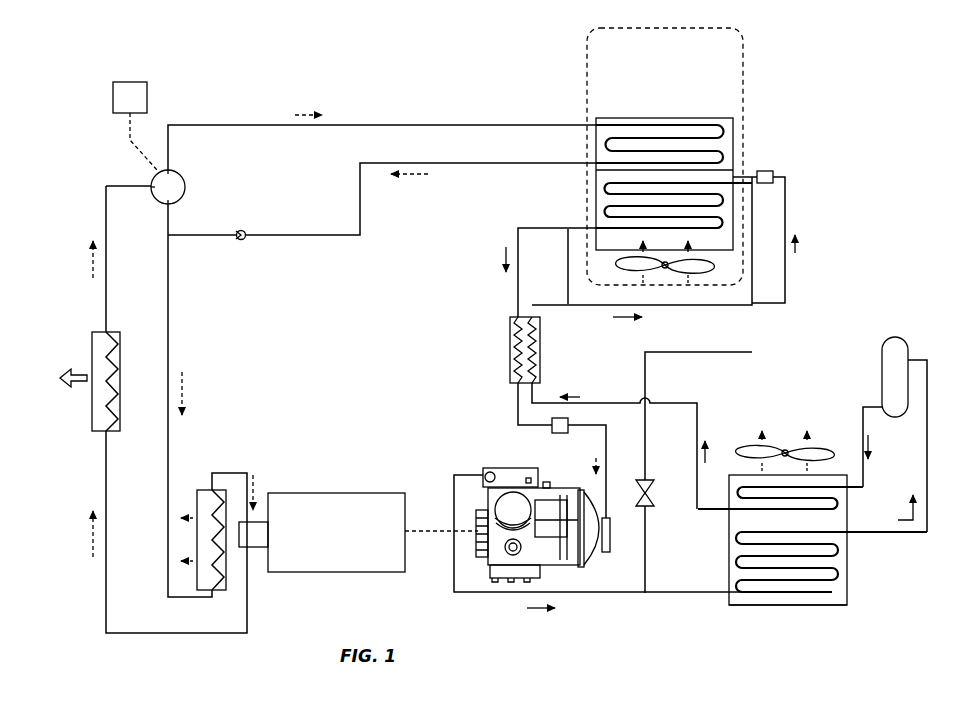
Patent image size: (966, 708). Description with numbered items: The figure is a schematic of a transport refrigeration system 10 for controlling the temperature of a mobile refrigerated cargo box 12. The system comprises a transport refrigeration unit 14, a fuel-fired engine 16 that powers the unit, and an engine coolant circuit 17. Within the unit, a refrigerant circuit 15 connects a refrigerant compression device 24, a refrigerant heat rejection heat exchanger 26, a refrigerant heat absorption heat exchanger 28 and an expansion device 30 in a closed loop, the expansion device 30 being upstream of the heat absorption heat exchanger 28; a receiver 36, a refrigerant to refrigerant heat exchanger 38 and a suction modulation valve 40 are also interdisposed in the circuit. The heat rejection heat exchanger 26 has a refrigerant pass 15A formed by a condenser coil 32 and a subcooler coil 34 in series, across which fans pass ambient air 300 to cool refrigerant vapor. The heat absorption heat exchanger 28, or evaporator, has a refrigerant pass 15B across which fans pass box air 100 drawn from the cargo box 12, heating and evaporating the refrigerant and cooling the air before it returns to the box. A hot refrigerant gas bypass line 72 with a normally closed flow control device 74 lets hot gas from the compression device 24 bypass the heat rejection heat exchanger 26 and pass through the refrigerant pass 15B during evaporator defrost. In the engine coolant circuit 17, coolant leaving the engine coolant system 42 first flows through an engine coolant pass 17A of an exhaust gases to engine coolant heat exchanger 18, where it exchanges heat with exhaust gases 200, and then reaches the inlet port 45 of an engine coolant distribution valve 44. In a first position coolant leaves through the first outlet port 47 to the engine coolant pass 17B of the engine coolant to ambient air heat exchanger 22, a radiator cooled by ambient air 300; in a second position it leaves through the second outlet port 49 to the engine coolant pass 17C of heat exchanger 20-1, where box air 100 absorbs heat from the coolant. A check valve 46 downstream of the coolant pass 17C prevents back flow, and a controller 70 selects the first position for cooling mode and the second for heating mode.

The transport refrigeration system 10 is at (195, 72).
The mobile refrigerated cargo box 12 is at (743, 62).
The transport refrigeration unit 14 is at (818, 325).
The refrigerant circuit 15 is at (568, 266).
The refrigerant pass 15A is at (835, 545).
The refrigerant pass 15B is at (604, 186).
The fuel-fired engine 16 is at (352, 493).
The engine coolant circuit 17 is at (238, 125).
The engine coolant pass 17A is at (110, 385).
The engine coolant pass 17B is at (205, 535).
The engine coolant pass 17C is at (670, 137).
The engine exhaust gases to engine coolant heat exchanger 18 is at (120, 335).
The heat exchanger 20-1 is at (733, 135).
The engine coolant to ambient air heat exchanger 22 is at (197, 510).
The refrigerant compression device 24 is at (580, 565).
The refrigerant heat rejection heat exchanger 26 is at (847, 575).
The refrigerant heat absorption heat exchanger 28 is at (733, 202).
The expansion device 30 is at (768, 171).
The condenser coil 32 is at (797, 596).
The subcooler coil 34 is at (838, 506).
The receiver 36 is at (905, 338).
The refrigerant to refrigerant heat exchanger 38 is at (540, 349).
The suction modulation valve 40 is at (568, 424).
The engine coolant system 42 is at (262, 547).
The engine coolant distribution valve 44 is at (185, 187).
The inlet port 45 is at (151, 186).
The check valve 46 is at (243, 231).
The first outlet port 47 is at (172, 204).
The second outlet port 49 is at (174, 170).
The controller 70 is at (147, 97).
The hot refrigerant gas bypass line 72 is at (753, 292).
The flow control device 74 is at (650, 492).
The box air 100 is at (690, 283).
The engine exhaust gases 200 is at (75, 385).
The ambient air 300 is at (762, 437).